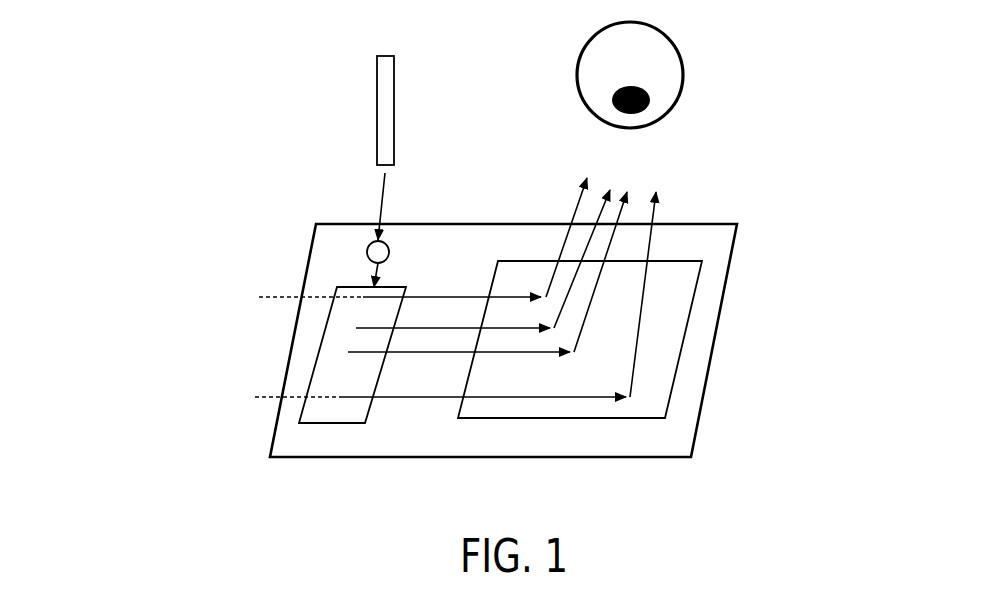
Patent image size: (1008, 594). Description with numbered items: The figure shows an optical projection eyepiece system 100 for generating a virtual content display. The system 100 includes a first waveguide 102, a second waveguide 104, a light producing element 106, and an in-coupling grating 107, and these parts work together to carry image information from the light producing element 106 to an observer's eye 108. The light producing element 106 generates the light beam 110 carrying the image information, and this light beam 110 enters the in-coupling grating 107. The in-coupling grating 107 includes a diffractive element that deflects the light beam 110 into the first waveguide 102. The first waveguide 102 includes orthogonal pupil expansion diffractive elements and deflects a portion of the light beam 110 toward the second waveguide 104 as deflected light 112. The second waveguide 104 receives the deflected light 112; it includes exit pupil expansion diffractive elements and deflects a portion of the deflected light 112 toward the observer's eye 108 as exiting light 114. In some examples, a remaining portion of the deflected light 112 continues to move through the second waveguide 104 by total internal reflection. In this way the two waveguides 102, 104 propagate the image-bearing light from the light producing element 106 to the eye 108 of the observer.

The optical projection eyepiece system 100 is at (166, 136).
The first waveguide 102 is at (330, 427).
The second waveguide 104 is at (677, 386).
The light producing element 106 is at (375, 80).
The in-coupling grating 107 is at (352, 252).
The observer's eye 108 is at (585, 45).
The light beam 110 is at (357, 202).
The deflected light 112 is at (242, 295).
The exiting light 114 is at (577, 182).